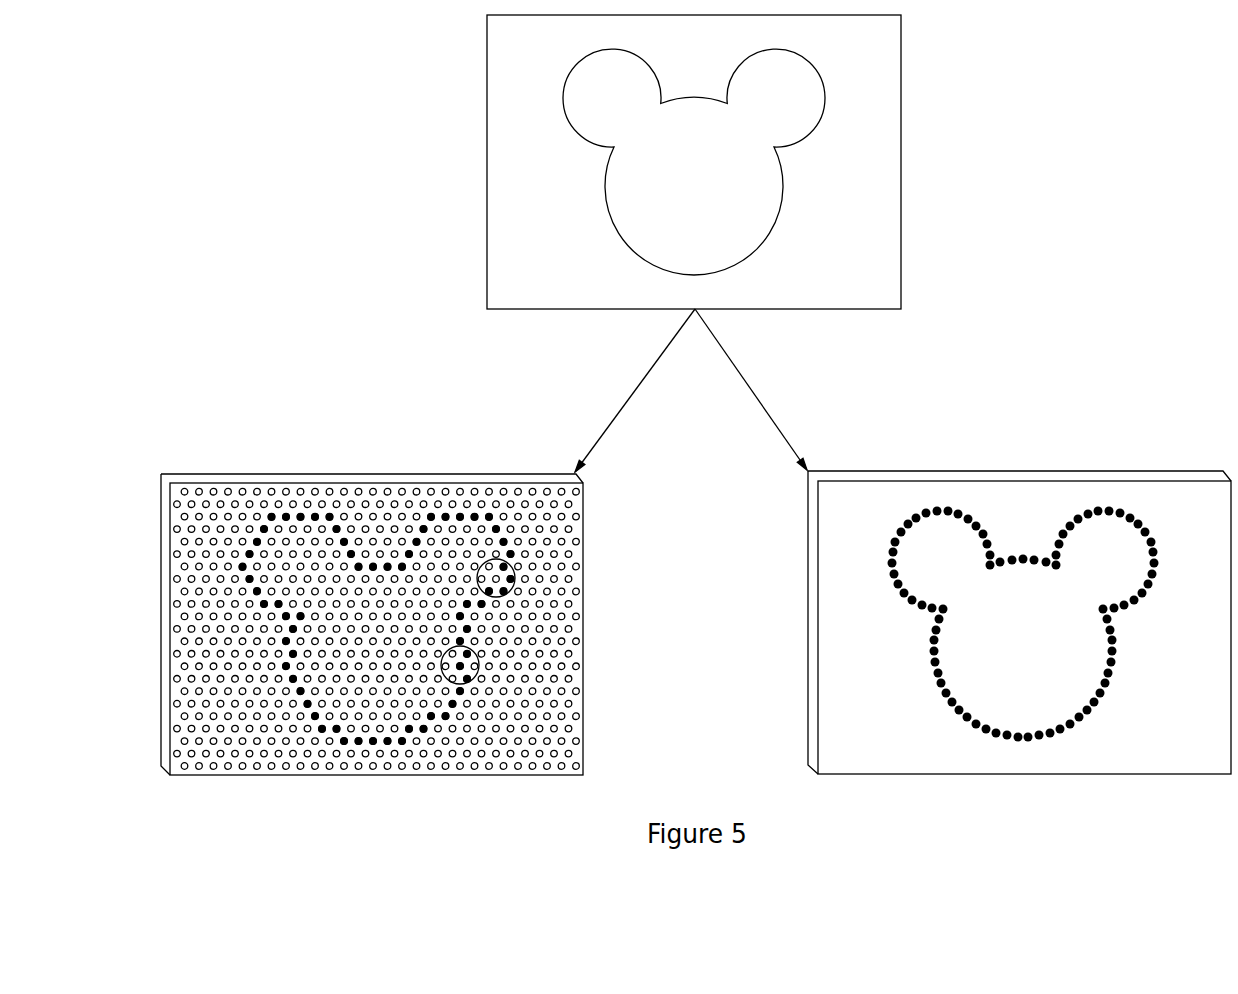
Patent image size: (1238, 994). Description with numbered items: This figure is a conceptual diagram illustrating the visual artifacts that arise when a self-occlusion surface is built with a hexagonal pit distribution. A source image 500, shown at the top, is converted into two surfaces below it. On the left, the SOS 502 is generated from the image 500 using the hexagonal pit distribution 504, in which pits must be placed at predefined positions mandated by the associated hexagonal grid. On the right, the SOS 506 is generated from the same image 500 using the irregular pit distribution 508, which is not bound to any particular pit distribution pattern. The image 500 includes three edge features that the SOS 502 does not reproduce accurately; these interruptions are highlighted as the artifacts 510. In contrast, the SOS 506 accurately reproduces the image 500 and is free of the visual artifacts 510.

The image 500 is at (487, 117).
The SOS 502 is at (374, 474).
The hexagonal pit distribution 504 is at (613, 417).
The SOS 506 is at (1018, 471).
The irregular pit distribution 508 is at (775, 417).
The artifacts 510 is at (472, 650).